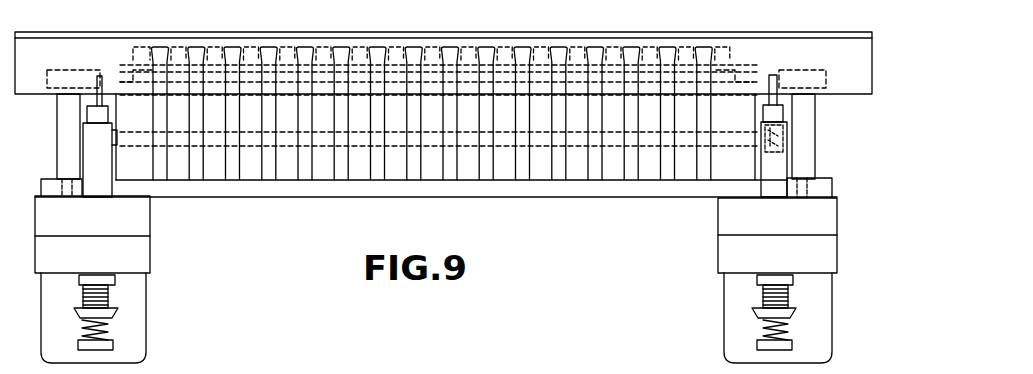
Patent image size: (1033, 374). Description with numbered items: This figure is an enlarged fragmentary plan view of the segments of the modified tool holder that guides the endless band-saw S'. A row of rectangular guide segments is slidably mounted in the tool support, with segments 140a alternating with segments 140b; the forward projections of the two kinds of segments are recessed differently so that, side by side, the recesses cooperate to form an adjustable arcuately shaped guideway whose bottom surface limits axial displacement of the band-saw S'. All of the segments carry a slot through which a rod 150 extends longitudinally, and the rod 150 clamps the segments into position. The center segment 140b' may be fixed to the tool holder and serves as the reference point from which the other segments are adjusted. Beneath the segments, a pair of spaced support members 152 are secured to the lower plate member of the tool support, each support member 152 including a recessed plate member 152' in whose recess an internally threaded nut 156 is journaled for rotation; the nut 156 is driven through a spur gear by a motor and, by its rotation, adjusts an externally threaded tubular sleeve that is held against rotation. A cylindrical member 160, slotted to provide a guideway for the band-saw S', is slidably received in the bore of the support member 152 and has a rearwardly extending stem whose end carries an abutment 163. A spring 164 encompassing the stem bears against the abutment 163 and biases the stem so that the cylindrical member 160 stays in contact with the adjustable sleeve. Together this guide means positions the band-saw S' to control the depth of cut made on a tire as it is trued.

The band-saw S' is at (465, 63).
The guide segment 140a is at (232, 46).
The guide segment 140b is at (431, 30).
The center segment 140b' is at (341, 200).
The rod 150 is at (450, 150).
The support member 152 is at (747, 280).
The plate member 152' is at (129, 279).
The internally threaded nut 156 is at (110, 280).
The cylindrical member 160 is at (99, 75).
The abutment 163 is at (790, 343).
The spring 164 is at (764, 325).